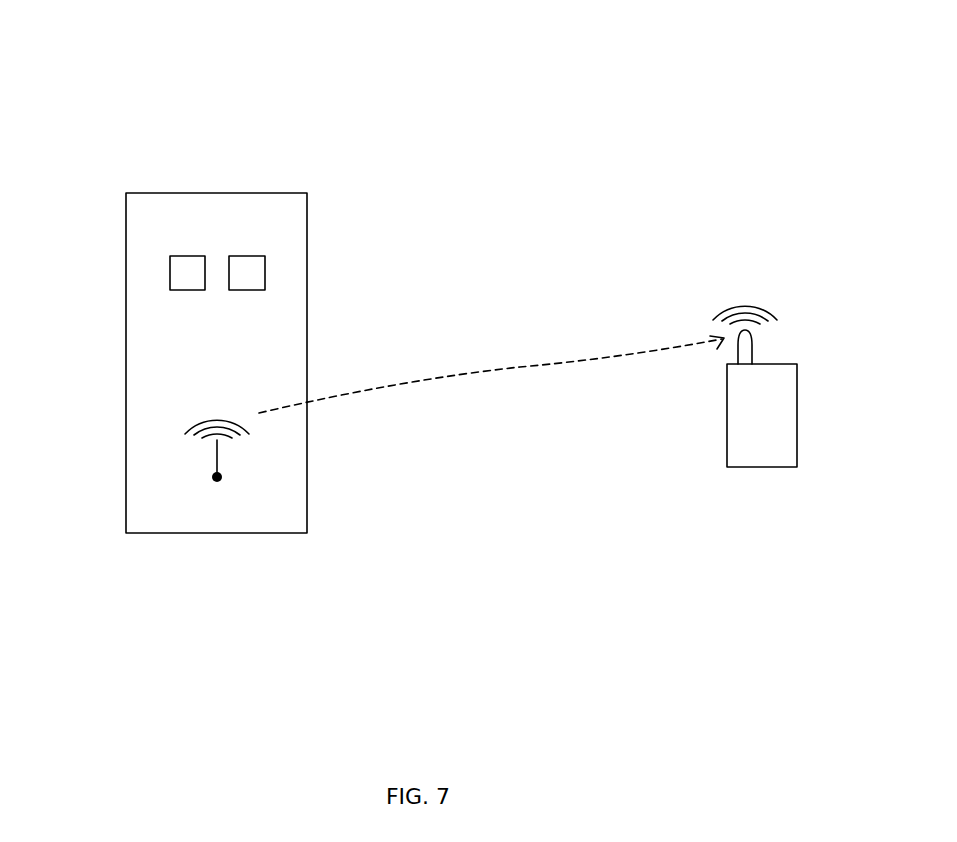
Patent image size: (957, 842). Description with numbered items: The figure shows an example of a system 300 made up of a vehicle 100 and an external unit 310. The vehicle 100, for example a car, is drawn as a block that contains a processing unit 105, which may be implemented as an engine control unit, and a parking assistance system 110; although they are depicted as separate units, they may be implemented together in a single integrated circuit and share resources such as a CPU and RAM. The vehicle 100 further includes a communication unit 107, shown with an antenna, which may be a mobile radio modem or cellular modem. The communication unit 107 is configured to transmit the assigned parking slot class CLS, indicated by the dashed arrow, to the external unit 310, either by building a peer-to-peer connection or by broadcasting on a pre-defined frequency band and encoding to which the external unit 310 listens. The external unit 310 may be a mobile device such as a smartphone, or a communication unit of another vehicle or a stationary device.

The system 300 is at (386, 104).
The vehicle 100 is at (126, 218).
The processing unit 105 is at (170, 277).
The parking assistance system 110 is at (265, 277).
The communication unit 107 is at (217, 459).
The external unit 310 is at (797, 415).
The assigned parking slot class CLS is at (520, 367).